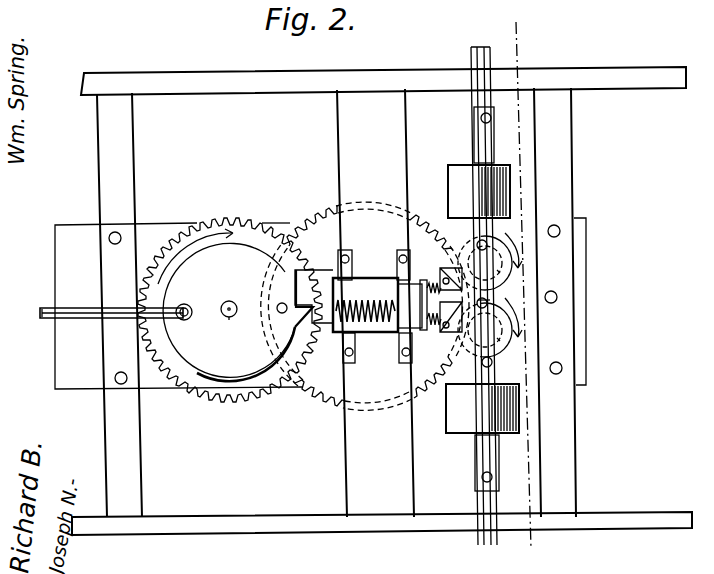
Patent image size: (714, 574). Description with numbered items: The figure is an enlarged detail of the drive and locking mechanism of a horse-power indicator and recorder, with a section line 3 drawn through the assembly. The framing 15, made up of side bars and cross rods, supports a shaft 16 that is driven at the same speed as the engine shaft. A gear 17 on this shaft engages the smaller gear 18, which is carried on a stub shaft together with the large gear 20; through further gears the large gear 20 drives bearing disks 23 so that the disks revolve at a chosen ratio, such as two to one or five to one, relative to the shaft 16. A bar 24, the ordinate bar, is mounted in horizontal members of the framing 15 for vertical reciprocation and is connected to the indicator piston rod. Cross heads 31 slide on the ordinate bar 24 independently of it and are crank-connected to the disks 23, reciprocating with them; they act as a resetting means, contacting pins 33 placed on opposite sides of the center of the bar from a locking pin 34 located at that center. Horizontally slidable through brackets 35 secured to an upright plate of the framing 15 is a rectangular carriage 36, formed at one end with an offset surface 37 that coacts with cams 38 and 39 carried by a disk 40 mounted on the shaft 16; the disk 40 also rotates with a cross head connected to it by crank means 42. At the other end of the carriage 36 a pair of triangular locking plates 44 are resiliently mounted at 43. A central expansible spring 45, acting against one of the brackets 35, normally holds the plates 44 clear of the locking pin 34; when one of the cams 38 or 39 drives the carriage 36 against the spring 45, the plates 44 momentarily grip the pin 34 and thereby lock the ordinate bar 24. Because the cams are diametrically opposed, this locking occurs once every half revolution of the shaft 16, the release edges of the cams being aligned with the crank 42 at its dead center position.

The framing 15 is at (266, 77).
The section line 3 is at (522, 274).
The shaft 16 is at (231, 318).
The gear 17 is at (251, 224).
The smaller gear 18 is at (414, 210).
The large gear 20 is at (299, 203).
The bearing disks 23 is at (500, 236).
The ordinate bar 24 is at (489, 470).
The cross heads 31 is at (500, 192).
The pins 33 is at (478, 245).
The locking pin 34 is at (490, 302).
The brackets 35 is at (402, 303).
The rectangular carriage 36 is at (378, 396).
The offset surface 37 is at (300, 281).
The cam 38 is at (316, 377).
The cam 39 is at (150, 298).
The disk 40 is at (222, 288).
The crank means 42 is at (85, 318).
The resilient mounting 43 is at (415, 341).
The triangular locking plates 44 is at (497, 273).
The expansible spring 45 is at (352, 292).